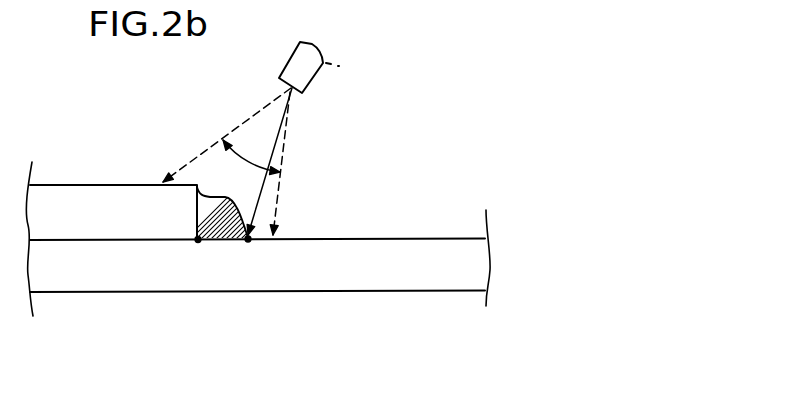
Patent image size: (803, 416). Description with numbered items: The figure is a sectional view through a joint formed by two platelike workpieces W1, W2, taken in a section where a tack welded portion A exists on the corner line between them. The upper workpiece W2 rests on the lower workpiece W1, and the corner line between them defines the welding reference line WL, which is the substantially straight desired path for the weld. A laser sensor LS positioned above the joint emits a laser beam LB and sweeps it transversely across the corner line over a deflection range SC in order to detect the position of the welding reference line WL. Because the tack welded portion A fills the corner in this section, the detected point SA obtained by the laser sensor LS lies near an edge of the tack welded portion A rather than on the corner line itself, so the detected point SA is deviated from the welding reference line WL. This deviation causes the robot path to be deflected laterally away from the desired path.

The laser sensor LS is at (310, 72).
The deflection range SC is at (240, 158).
The laser beam LB is at (267, 193).
The platelike workpiece W2 is at (120, 230).
The platelike workpiece W1 is at (120, 284).
The welding reference line WL is at (197, 240).
The tack welded portion A is at (213, 240).
The detected point SA is at (247, 239).